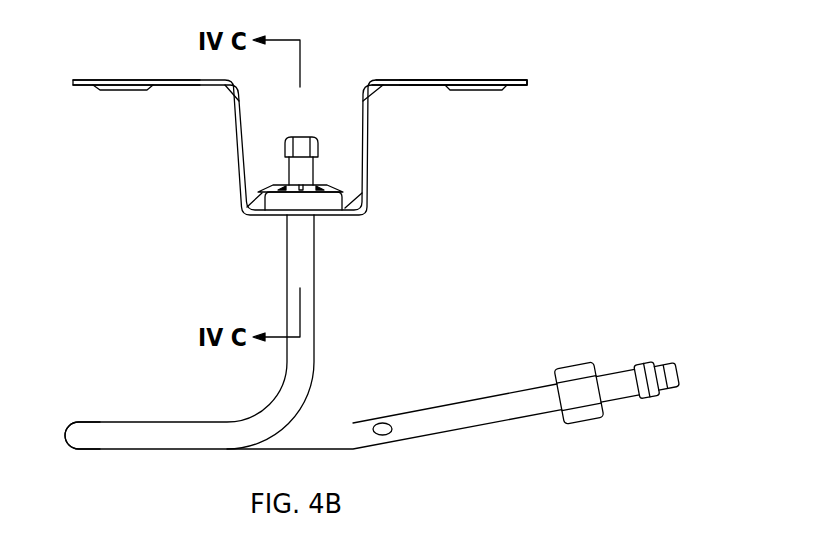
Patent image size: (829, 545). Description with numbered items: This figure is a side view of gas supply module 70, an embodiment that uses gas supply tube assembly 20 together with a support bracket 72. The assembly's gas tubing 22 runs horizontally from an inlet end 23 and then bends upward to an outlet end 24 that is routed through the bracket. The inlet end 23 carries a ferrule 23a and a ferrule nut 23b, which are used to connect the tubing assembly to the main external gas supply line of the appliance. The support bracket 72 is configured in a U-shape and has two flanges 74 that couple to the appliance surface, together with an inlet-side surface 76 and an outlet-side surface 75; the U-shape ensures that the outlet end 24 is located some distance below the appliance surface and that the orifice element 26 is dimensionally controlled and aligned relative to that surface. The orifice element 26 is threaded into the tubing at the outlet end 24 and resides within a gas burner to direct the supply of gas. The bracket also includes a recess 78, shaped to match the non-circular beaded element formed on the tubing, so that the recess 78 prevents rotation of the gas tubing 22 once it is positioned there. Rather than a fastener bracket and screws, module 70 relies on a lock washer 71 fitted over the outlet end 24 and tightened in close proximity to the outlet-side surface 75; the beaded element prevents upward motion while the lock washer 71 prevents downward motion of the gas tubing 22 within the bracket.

The gas supply tube assembly 20 is at (178, 421).
The gas tubing 22 is at (100, 422).
The inlet end 23 is at (667, 363).
The ferrule 23a is at (640, 365).
The ferrule nut 23b is at (578, 363).
The outlet end 24 is at (295, 167).
The orifice element 26 is at (286, 138).
The gas supply module 70 is at (500, 207).
The lock washer 71 is at (325, 188).
The support bracket 72 is at (527, 78).
The flanges 74 is at (493, 80).
The outlet-side surface 75 is at (110, 79).
The inlet-side surface 76 is at (92, 87).
The recess 78 is at (330, 200).